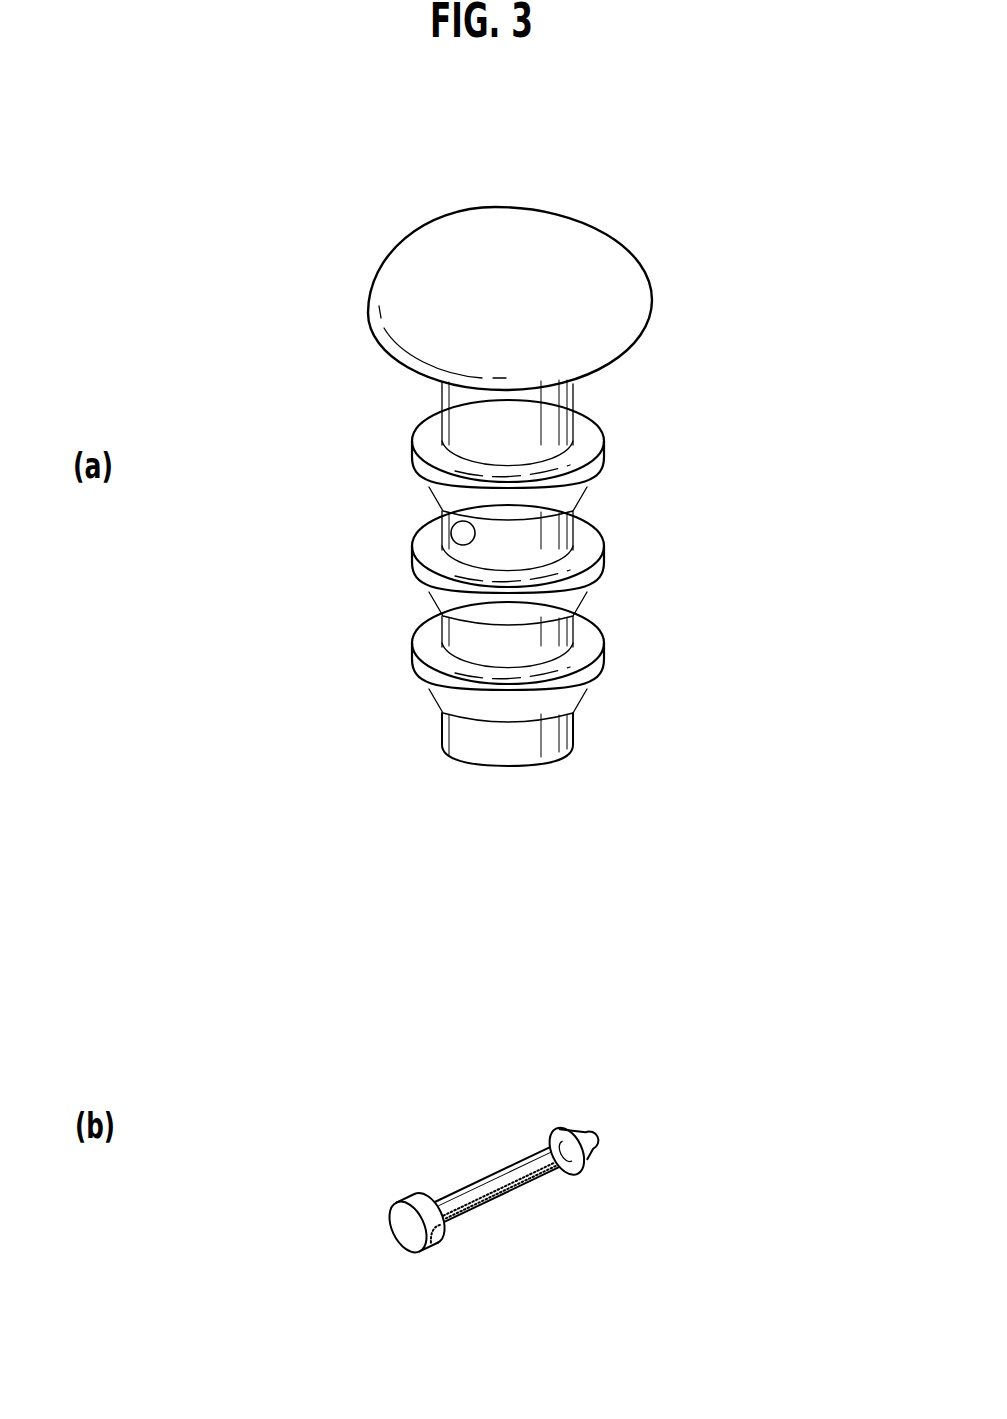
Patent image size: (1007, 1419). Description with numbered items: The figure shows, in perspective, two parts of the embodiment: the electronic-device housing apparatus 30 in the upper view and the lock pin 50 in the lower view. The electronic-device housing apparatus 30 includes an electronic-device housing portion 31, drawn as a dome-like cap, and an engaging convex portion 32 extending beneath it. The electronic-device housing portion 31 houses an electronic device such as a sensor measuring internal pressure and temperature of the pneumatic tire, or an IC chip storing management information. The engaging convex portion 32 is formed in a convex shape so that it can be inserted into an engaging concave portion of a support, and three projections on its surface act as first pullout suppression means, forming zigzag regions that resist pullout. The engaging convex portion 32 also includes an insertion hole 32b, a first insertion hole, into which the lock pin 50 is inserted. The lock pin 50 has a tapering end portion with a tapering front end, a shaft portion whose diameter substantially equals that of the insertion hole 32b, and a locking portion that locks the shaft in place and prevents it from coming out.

The electronic-device housing apparatus 30 is at (487, 417).
The electronic-device housing portion 31 is at (627, 276).
The engaging convex portion 32 is at (481, 573).
The insertion hole 32b is at (460, 532).
The lock pin 50 is at (537, 1180).